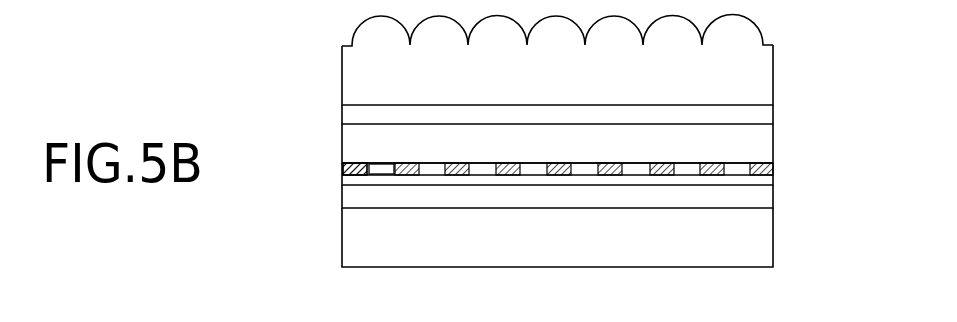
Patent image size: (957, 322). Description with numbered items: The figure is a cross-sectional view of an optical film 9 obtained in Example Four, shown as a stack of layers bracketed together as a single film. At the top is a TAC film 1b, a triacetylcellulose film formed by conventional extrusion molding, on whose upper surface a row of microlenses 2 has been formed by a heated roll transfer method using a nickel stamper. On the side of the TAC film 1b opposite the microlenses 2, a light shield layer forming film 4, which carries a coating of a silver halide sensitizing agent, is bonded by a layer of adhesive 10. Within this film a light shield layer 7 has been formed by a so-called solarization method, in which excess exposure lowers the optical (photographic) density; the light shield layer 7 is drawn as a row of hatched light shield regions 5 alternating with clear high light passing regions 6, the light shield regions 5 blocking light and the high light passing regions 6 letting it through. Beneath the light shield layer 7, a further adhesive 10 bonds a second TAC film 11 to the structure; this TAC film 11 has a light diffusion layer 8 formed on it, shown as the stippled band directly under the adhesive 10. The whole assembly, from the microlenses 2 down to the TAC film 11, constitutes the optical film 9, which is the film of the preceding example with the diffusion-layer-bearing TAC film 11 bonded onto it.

The microlenses 2 is at (747, 30).
The TAC film 1b is at (557, 75).
The adhesive 10 is at (768, 113).
The light shield layer forming film 4 is at (557, 143).
The light shield region 5 is at (352, 163).
The light shield layer 7 is at (343, 170).
The high light passing region 6 is at (430, 172).
The light diffusion layer 8 is at (770, 193).
The TAC film 11 is at (557, 237).
The optical film 9 is at (833, 17).